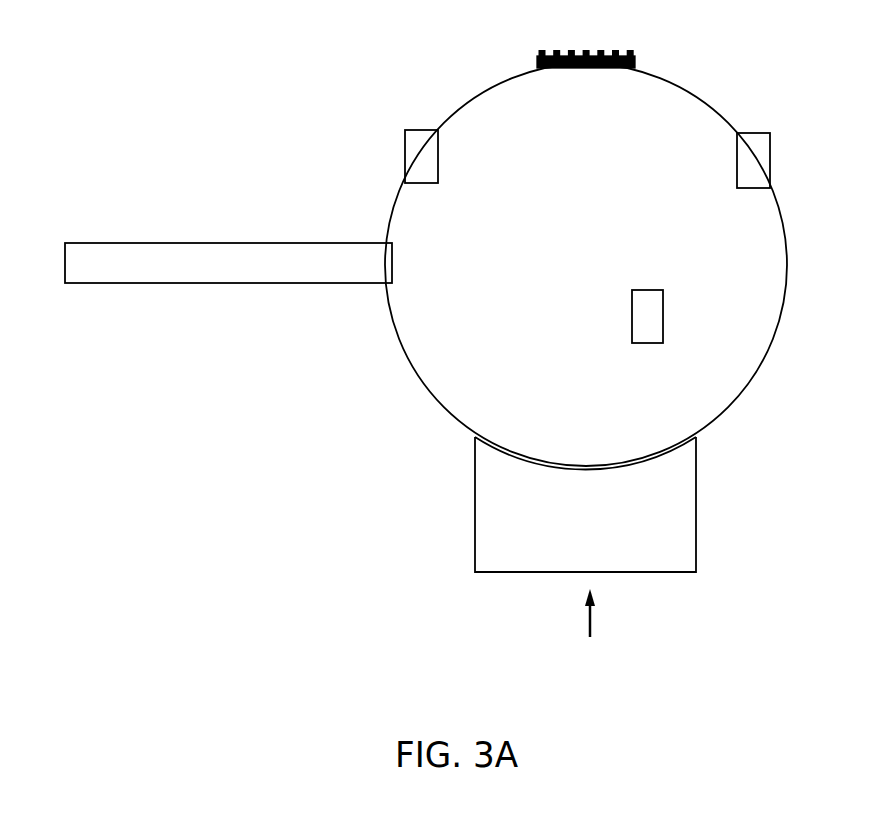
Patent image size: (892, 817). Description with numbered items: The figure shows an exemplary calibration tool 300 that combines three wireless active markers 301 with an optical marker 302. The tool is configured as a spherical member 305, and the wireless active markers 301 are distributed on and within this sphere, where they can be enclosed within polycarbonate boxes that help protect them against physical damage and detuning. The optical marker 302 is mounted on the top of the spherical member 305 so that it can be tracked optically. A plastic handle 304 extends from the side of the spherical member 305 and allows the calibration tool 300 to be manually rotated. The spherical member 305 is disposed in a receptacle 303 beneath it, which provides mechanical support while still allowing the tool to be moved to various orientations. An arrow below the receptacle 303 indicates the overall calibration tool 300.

The calibration tool 300 is at (589, 636).
The wireless active marker 301 is at (438, 160).
The optical marker 302 is at (537, 61).
The receptacle 303 is at (696, 513).
The plastic handle 304 is at (266, 283).
The spherical member 305 is at (533, 330).